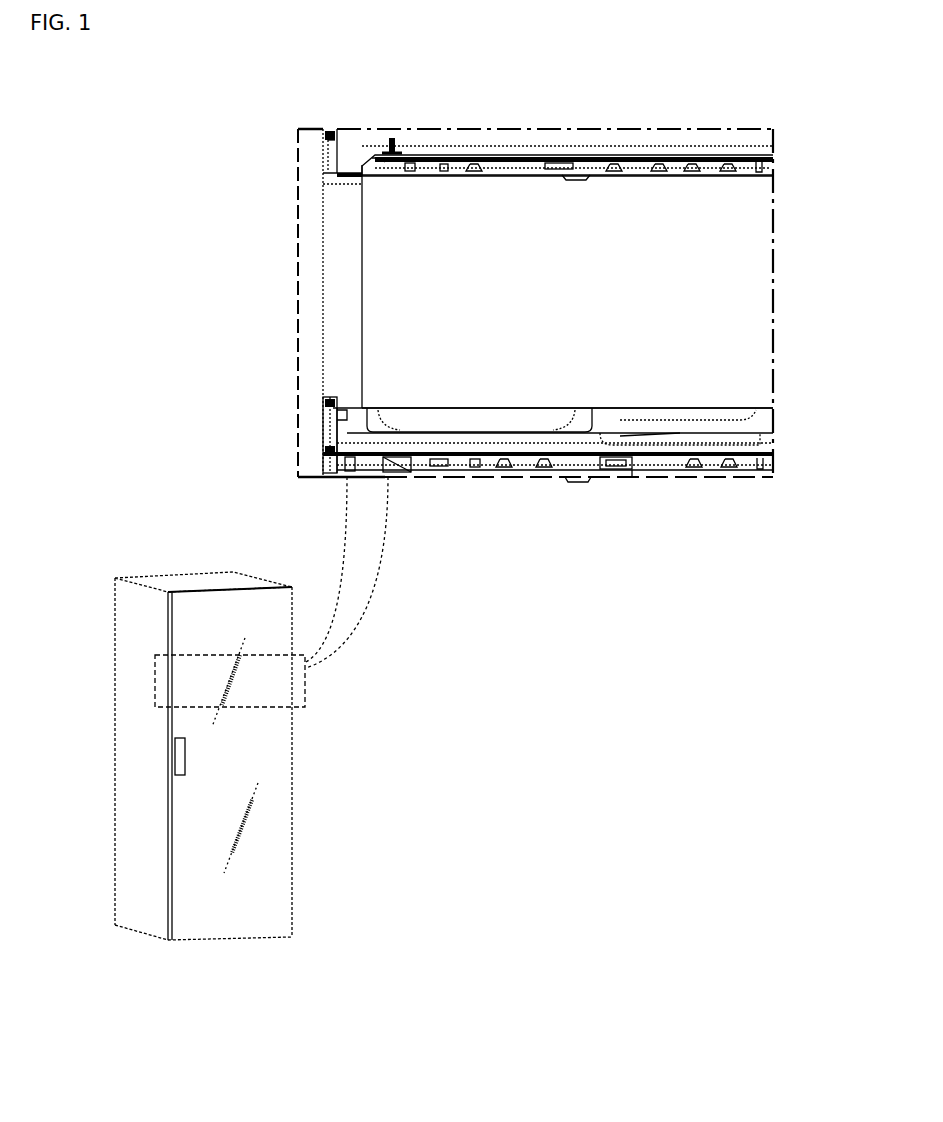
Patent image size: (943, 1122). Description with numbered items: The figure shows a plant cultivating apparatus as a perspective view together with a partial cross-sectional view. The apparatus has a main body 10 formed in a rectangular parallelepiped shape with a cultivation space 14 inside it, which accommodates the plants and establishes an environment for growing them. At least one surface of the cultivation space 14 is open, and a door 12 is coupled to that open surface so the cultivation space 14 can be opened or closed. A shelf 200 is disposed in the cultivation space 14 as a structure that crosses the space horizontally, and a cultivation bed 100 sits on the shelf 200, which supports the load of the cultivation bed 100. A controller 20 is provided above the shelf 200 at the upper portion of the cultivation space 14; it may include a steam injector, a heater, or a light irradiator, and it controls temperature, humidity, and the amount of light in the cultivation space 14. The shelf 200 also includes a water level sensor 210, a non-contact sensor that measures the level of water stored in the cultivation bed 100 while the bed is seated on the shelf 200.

The main body 10 is at (295, 148).
The door 12 is at (334, 237).
The cultivation space 14 is at (737, 226).
The controller 20 is at (526, 148).
The cultivation bed 100 is at (305, 425).
The shelf 200 is at (578, 478).
The water level sensor 210 is at (622, 470).